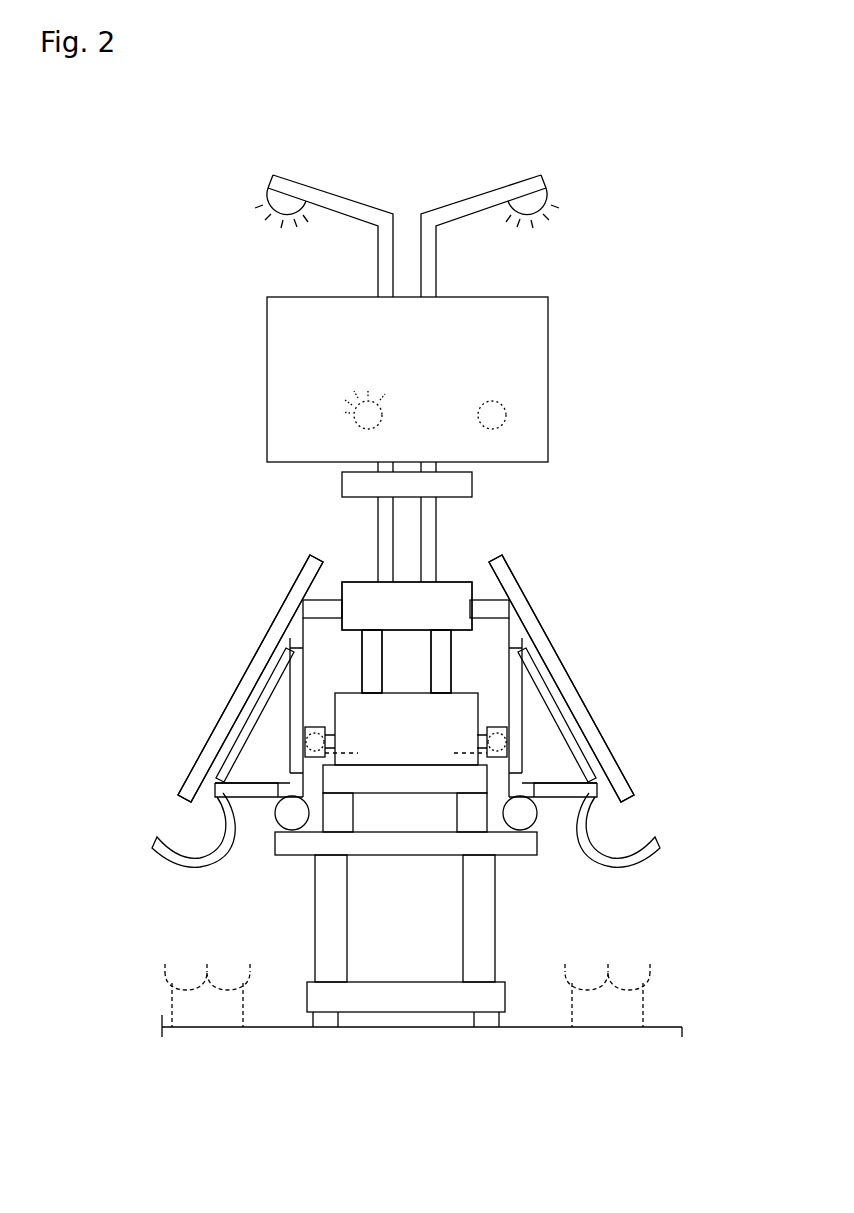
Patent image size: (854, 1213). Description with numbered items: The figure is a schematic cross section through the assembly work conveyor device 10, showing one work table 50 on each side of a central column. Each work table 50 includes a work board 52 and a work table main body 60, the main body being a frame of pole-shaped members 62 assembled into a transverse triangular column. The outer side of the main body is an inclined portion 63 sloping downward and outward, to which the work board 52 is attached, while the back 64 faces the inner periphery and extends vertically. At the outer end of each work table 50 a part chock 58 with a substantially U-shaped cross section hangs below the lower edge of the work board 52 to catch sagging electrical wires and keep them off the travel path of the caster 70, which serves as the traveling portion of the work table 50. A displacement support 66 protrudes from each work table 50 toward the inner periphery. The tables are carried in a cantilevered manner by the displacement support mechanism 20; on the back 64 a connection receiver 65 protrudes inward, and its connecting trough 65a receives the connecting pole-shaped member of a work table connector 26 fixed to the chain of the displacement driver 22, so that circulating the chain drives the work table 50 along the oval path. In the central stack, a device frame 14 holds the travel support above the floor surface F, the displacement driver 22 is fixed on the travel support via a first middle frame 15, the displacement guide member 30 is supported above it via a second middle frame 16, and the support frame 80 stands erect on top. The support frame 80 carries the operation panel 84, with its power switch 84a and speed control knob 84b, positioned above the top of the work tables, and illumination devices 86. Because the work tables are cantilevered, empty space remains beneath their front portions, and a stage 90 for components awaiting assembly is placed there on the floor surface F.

The assembly work conveyor device 10 is at (490, 131).
The illumination device 86 is at (264, 203).
The operation panel 84 is at (548, 362).
The power switch 84a is at (506, 415).
The speed control knob 84b is at (385, 403).
The support frame 80 is at (472, 505).
The displacement support mechanism 20 is at (457, 571).
The displacement guide member 30 is at (351, 574).
The displacement driver 22 is at (457, 672).
The second middle frame 16 is at (431, 651).
The work table connector 26 is at (337, 730).
The connecting trough 65a is at (406, 753).
The first middle frame 15 is at (352, 816).
The caster 70 is at (303, 838).
The device frame 14 is at (348, 935).
The floor surface F is at (660, 1026).
The stage 90 is at (160, 983).
The work table 50 is at (214, 662).
The displacement support 66 is at (325, 598).
The back 64 is at (305, 675).
The inclined portion 63 is at (272, 652).
The pole-shaped member 62 is at (243, 735).
The work table main body 60 is at (257, 800).
The connection receiver 65 is at (305, 730).
The work board 52 is at (200, 748).
The part chock 58 is at (157, 855).